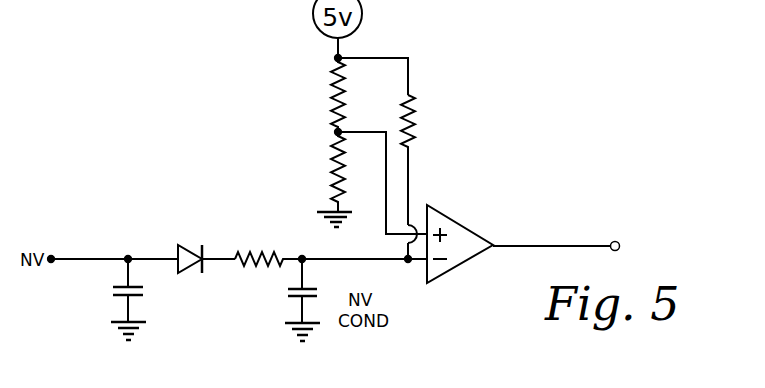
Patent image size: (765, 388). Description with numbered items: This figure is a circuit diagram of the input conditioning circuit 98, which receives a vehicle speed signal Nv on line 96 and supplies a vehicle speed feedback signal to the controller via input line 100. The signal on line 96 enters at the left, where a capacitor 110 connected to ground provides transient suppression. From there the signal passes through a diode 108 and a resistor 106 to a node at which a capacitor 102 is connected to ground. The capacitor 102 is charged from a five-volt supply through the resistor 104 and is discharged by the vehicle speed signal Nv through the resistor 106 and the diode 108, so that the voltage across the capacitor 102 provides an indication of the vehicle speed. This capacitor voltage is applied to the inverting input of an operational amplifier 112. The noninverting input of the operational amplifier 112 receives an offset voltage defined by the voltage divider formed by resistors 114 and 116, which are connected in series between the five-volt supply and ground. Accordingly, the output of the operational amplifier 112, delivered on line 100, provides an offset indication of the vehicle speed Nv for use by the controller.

The line 96 is at (81, 259).
The input conditioning circuit 98 is at (212, 131).
The input line 100 is at (560, 246).
The capacitor 102 is at (288, 296).
The resistor 104 is at (418, 102).
The resistor 106 is at (265, 256).
The diode 108 is at (183, 244).
The capacitor 110 is at (143, 295).
The operational amplifier 112 is at (463, 265).
The voltage divider resistor 114 is at (333, 100).
The voltage divider resistor 116 is at (335, 168).